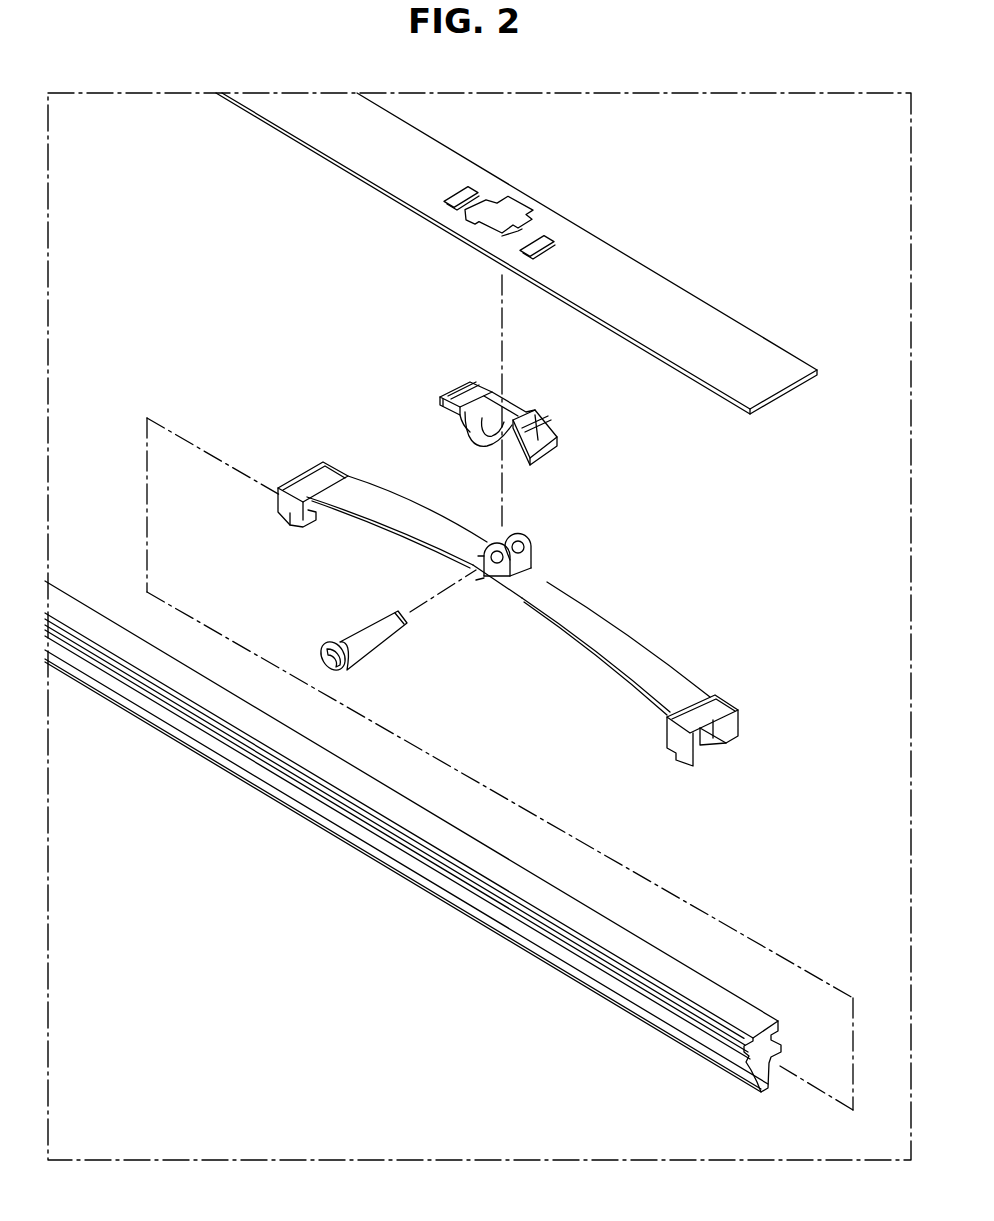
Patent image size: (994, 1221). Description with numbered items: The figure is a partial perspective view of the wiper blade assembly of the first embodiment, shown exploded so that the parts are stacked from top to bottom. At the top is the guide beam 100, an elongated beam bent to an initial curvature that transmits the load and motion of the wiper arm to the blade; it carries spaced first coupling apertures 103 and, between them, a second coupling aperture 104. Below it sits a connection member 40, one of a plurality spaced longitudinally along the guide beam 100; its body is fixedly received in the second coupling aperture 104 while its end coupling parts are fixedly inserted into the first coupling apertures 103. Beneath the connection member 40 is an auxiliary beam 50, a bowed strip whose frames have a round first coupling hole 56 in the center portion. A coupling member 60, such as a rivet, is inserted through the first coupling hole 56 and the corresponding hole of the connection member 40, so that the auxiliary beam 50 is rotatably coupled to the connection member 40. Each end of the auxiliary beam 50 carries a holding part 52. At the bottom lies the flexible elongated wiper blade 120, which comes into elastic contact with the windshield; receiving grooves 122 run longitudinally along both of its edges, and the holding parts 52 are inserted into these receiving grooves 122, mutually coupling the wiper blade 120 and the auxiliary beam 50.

The guide beam 100 is at (663, 320).
The first coupling apertures 103 is at (470, 188).
The second coupling apertures 104 is at (506, 210).
The connection member 40 is at (487, 398).
The auxiliary beam 50 is at (628, 652).
The holding parts 52 is at (287, 513).
The first coupling hole 56 is at (493, 565).
The coupling member 60 is at (371, 641).
The wiper blade 120 is at (398, 814).
The receiving grooves 122 is at (640, 1000).